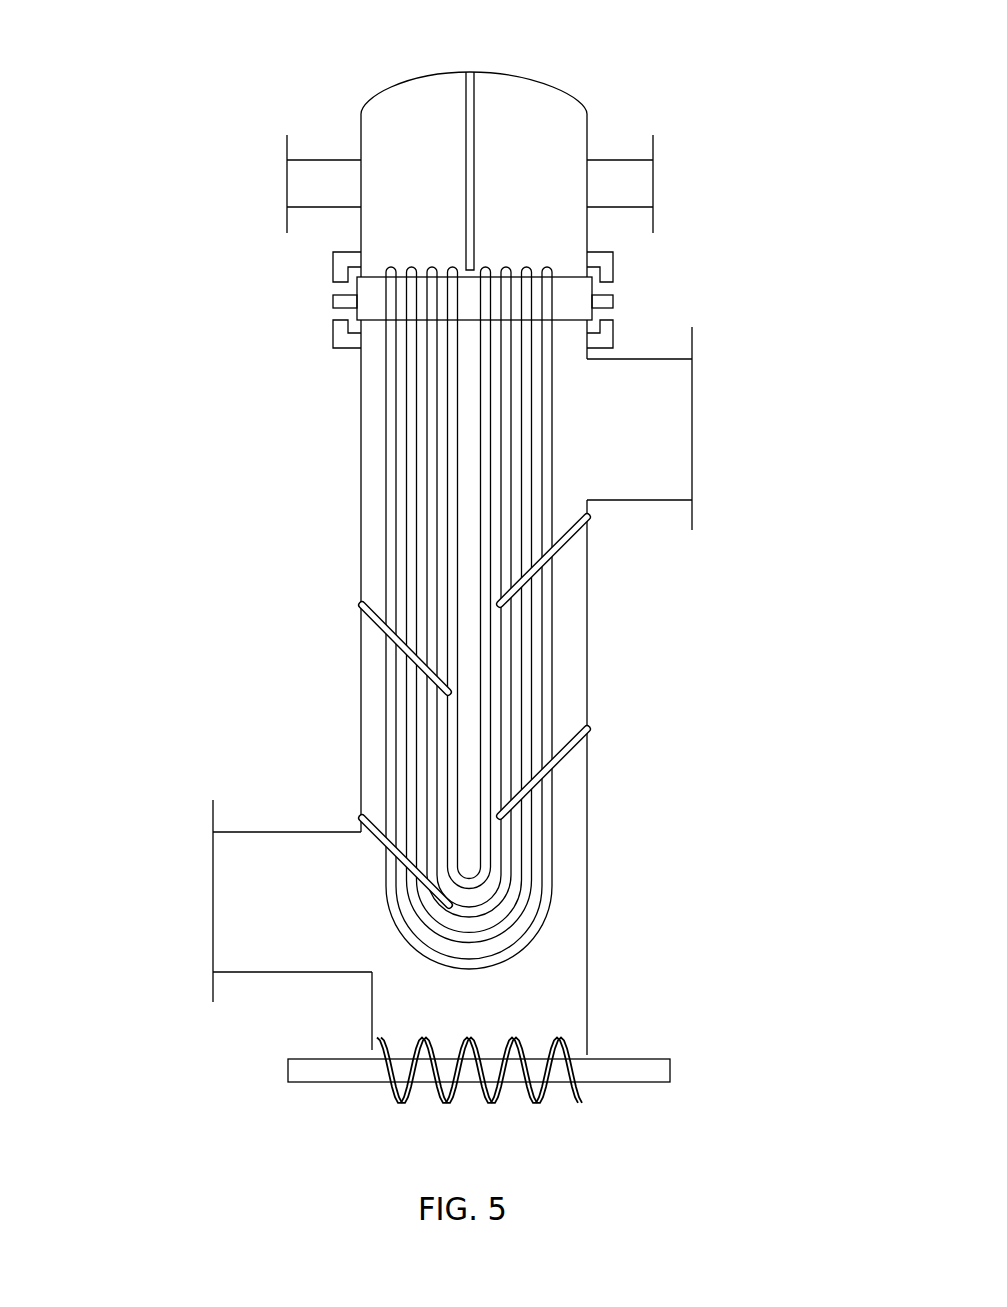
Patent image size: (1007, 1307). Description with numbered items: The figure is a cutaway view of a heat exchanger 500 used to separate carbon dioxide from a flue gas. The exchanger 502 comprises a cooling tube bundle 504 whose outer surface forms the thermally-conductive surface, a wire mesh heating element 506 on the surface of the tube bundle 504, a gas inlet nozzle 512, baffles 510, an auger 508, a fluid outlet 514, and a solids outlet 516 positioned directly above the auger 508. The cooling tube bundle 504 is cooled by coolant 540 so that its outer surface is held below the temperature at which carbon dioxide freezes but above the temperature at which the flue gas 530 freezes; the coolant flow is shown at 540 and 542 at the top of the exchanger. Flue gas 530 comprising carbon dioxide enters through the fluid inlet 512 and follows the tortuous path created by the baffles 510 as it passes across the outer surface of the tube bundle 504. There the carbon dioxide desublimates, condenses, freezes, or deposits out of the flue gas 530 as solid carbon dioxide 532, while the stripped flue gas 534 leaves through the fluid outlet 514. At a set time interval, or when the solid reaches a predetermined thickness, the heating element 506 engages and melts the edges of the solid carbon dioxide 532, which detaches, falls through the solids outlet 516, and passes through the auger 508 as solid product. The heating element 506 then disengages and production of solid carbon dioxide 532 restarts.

The heat exchanger 500 is at (113, 46).
The exchanger 502 is at (360, 445).
The cooling tube bundle 504 is at (568, 297).
The wire mesh heating element 506 is at (557, 873).
The auger 508 is at (345, 1075).
The baffles 510 is at (575, 742).
The gas inlet nozzle 512 is at (627, 500).
The fluid outlet 514 is at (300, 830).
The solids outlet 516 is at (363, 1007).
The flue gas 530 is at (718, 428).
The solid carbon dioxide 532 is at (517, 1000).
The stripped flue gas 534 is at (213, 902).
The coolant 540 is at (680, 184).
The tube-side fluid outlet flow 542 is at (287, 184).